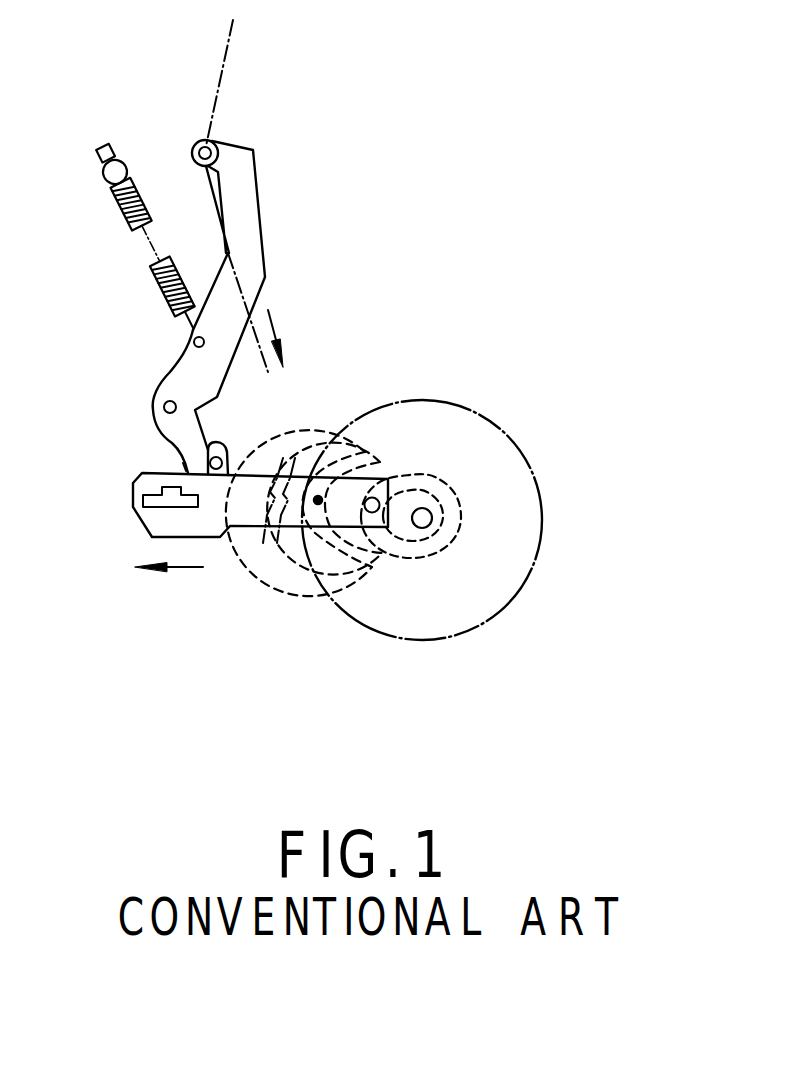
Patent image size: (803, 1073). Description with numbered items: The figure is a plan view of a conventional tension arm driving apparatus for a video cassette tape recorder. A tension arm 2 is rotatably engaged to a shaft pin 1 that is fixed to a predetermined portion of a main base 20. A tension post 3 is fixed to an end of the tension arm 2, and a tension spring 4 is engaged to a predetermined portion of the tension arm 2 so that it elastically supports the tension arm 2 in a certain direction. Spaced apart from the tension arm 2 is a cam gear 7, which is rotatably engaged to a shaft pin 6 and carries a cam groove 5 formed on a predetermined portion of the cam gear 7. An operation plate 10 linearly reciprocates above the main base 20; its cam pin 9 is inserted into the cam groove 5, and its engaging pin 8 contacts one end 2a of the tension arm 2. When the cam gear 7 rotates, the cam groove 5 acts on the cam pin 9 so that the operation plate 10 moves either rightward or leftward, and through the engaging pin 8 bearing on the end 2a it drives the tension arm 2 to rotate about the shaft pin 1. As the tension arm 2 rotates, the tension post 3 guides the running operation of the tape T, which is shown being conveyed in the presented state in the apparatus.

The tape T is at (223, 58).
The shaft pin 1 is at (163, 407).
The tension arm 2 is at (253, 201).
The one end of the tension arm 2a is at (183, 463).
The tension post 3 is at (213, 143).
The tension spring 4 is at (138, 228).
The cam groove 5 is at (505, 474).
The shaft pin 6 is at (418, 527).
The cam gear 7 is at (500, 593).
The engaging pin 8 is at (227, 453).
The cam pin 9 is at (318, 505).
The operation plate 10 is at (137, 530).
The main base 20 is at (392, 294).